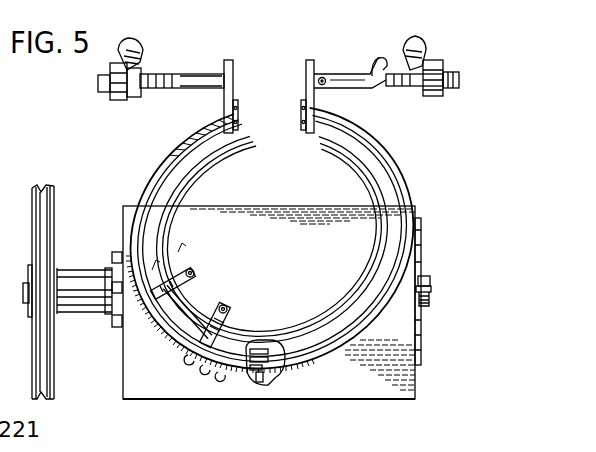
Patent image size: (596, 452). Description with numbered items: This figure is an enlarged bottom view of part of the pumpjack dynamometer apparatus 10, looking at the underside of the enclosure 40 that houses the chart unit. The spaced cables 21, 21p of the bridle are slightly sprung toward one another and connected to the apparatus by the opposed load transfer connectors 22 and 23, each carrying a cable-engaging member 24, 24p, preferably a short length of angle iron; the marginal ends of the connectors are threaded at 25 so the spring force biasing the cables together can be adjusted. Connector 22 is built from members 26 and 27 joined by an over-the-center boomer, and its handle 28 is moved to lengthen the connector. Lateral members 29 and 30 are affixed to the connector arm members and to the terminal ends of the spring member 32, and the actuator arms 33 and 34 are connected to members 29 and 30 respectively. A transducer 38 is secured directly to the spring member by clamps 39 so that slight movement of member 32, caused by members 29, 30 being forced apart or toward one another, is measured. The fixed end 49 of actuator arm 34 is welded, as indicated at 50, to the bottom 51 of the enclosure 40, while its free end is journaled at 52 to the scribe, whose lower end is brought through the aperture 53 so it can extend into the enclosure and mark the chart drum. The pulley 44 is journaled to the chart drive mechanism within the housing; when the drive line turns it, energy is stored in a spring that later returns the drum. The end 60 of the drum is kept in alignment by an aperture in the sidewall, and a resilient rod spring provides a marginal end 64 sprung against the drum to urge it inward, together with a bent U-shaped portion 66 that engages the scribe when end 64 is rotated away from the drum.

The pipe cutting tool 10 is at (420, 249).
The cable 21 is at (400, 42).
The cable 21p is at (143, 52).
The load transfer connector 22 is at (399, 104).
The load transfer connector 23 is at (166, 100).
The cable-engaging member 24 is at (430, 52).
The cable-engaging member 24p is at (118, 58).
The threaded marginal end 25 is at (459, 79).
The member 26 is at (368, 90).
The member 27 is at (338, 130).
The handle 28 is at (345, 70).
The lateral member 29 is at (303, 108).
The lateral member 30 is at (232, 105).
The spring member 32 is at (185, 165).
The actuator arm 33 is at (400, 190).
The actuator arm 34 is at (152, 165).
The transducer 38 is at (185, 315).
The clamp 39 is at (195, 276).
The enclosure 40 is at (432, 386).
The pulley 44 is at (60, 233).
The fixed end 49 is at (256, 385).
The weld 50 is at (200, 366).
The bottom 51 is at (368, 385).
The journal 52 is at (265, 345).
The aperture 53 is at (278, 377).
The end of drum 60 is at (422, 262).
The marginal end of spring 64 is at (428, 292).
The U-shaped portion 66 is at (106, 290).